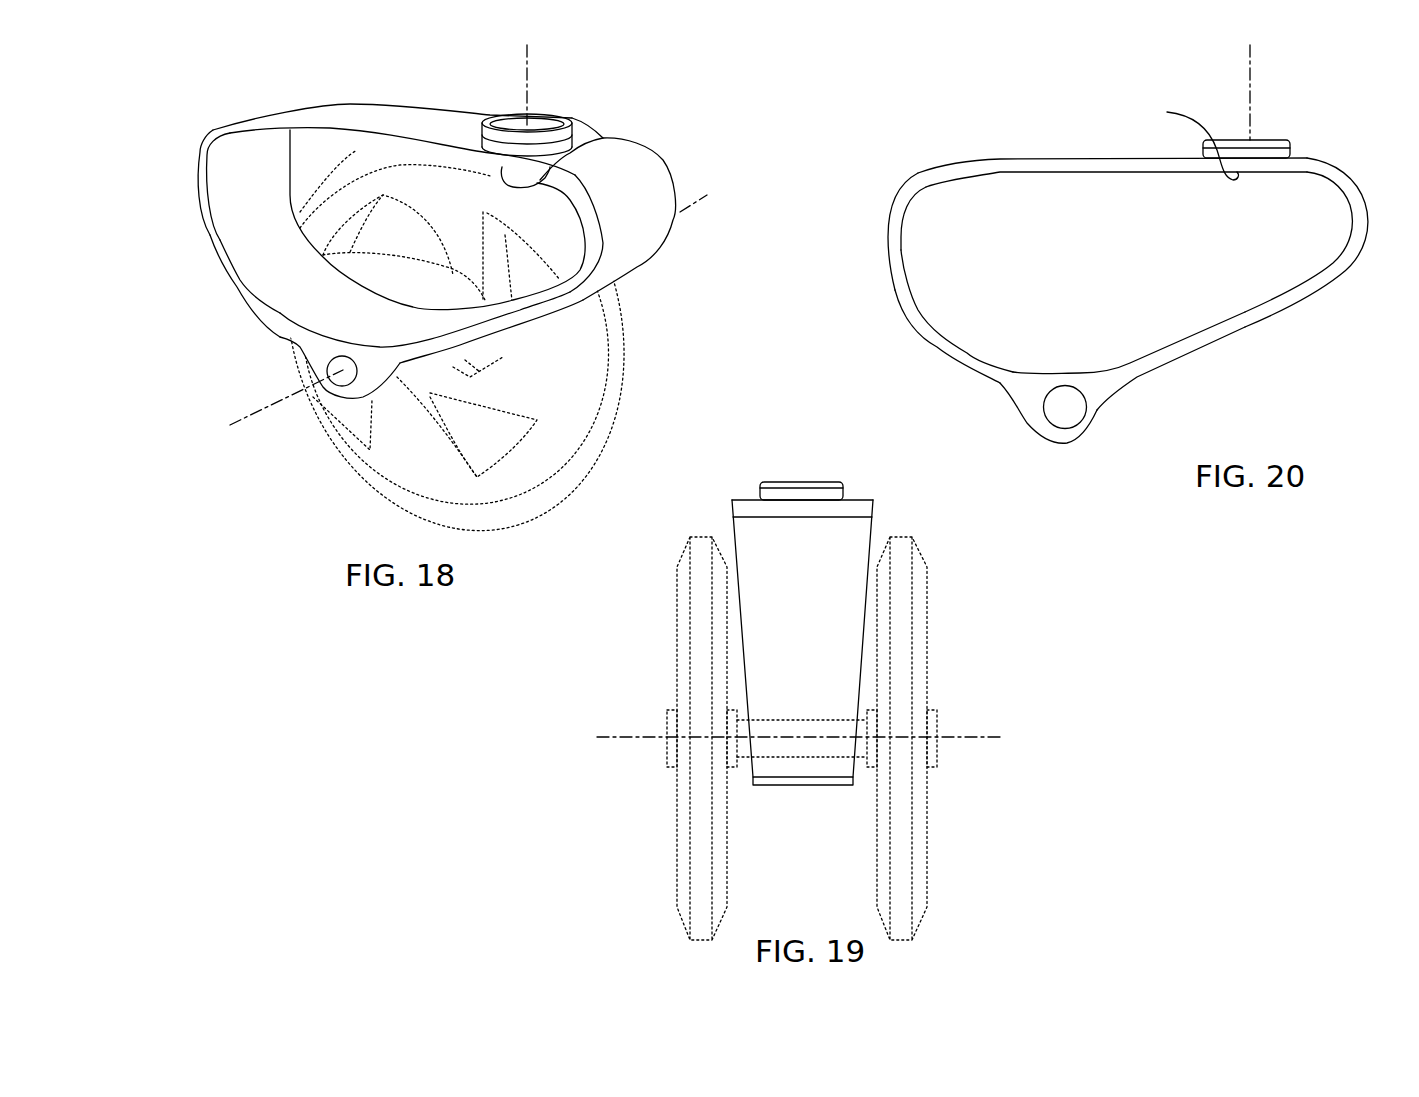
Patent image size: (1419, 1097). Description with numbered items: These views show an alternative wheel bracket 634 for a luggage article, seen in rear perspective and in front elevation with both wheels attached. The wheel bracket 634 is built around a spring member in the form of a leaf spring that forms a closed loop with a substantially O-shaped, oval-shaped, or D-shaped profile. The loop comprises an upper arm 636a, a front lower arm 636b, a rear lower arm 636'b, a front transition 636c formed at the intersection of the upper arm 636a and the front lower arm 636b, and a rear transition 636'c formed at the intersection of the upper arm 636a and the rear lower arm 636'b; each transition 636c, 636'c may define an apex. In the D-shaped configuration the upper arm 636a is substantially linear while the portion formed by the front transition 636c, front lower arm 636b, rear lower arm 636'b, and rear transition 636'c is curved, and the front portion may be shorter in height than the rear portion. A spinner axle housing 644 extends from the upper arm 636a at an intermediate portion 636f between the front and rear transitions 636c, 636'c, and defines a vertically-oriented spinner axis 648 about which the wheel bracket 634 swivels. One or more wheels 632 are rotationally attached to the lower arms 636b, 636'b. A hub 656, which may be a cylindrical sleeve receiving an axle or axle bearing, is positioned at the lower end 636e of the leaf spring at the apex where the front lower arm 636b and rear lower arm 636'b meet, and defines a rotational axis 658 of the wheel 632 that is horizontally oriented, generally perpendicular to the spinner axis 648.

In FIG. 18, the wheel 632 is at (572, 462).
In FIG. 18, the wheel bracket 634 is at (322, 512).
In FIG. 20, the wheel bracket 634 is at (903, 163).
In FIG. 19, the wheel bracket 634 is at (612, 778).
In FIG. 18, the upper arm 636a is at (352, 116).
In FIG. 20, the upper arm 636a is at (1073, 157).
In FIG. 19, the upper arm 636a is at (747, 498).
In FIG. 18, the front lower arm 636b is at (533, 327).
In FIG. 20, the front lower arm 636b is at (1257, 330).
In FIG. 19, the front lower arm 636b is at (813, 657).
In FIG. 18, the front transition 636c is at (657, 200).
In FIG. 20, the front transition 636c is at (1365, 210).
In FIG. 19, the front transition 636c is at (853, 537).
In FIG. 20, the lower end 636e is at (1077, 437).
In FIG. 19, the lower end 636e is at (773, 787).
In FIG. 18, the intermediate portion 636f is at (540, 180).
In FIG. 20, the intermediate portion 636f is at (1178, 141).
In FIG. 18, the rear lower arm 636'b is at (217, 292).
In FIG. 20, the rear lower arm 636'b is at (907, 316).
In FIG. 18, the rear transition 636'c is at (183, 156).
In FIG. 20, the rear transition 636'c is at (851, 231).
In FIG. 18, the spinner axle housing 644 is at (573, 115).
In FIG. 20, the spinner axle housing 644 is at (1290, 147).
In FIG. 19, the spinner axle housing 644 is at (843, 483).
In FIG. 18, the spinner axis 648 is at (527, 93).
In FIG. 20, the spinner axis 648 is at (1248, 55).
In FIG. 18, the hub 656 is at (377, 387).
In FIG. 20, the hub 656 is at (1057, 423).
In FIG. 19, the hub 656 is at (833, 757).
In FIG. 18, the rotational axis 658 is at (270, 407).
In FIG. 19, the rotational axis 658 is at (970, 737).